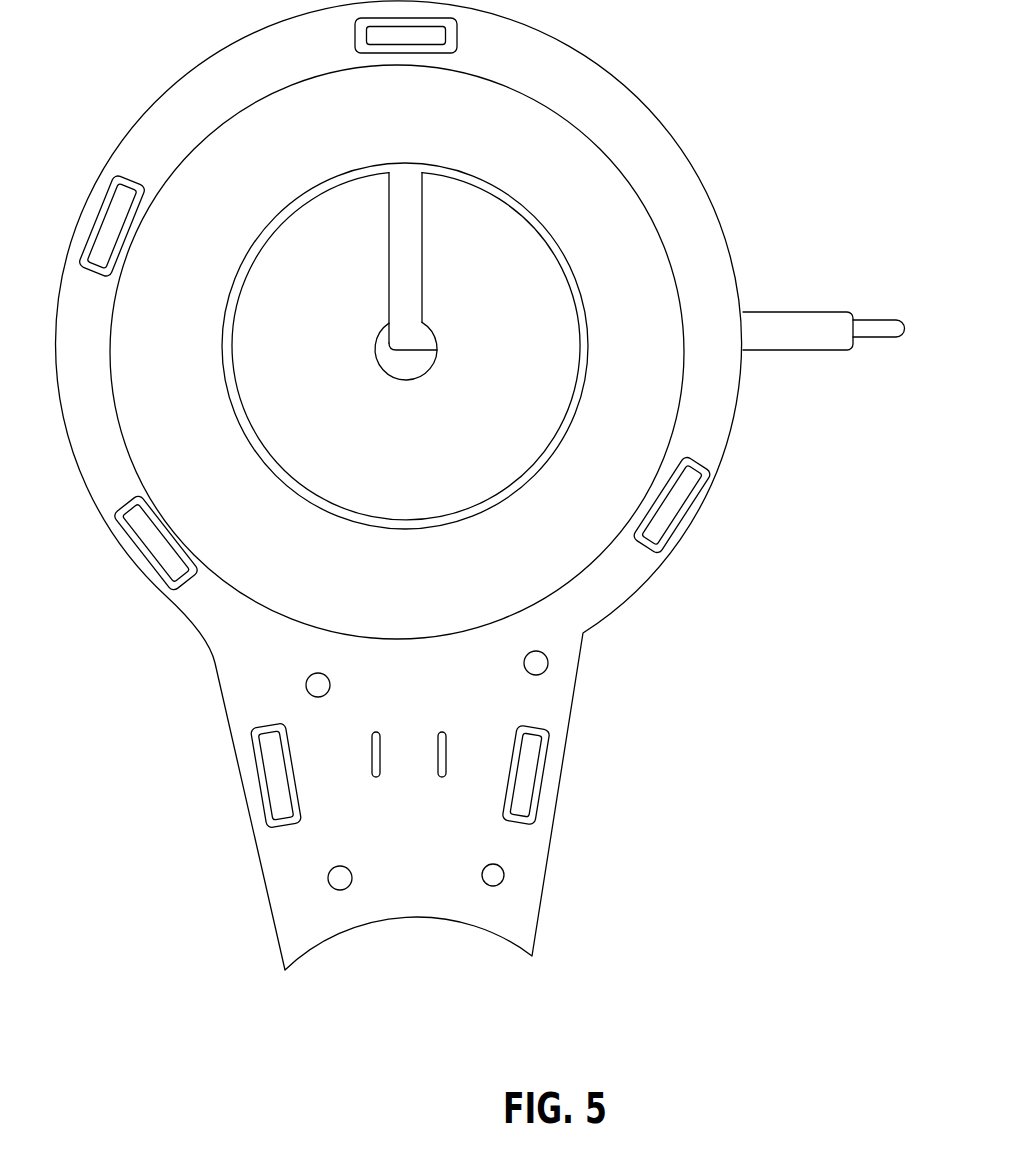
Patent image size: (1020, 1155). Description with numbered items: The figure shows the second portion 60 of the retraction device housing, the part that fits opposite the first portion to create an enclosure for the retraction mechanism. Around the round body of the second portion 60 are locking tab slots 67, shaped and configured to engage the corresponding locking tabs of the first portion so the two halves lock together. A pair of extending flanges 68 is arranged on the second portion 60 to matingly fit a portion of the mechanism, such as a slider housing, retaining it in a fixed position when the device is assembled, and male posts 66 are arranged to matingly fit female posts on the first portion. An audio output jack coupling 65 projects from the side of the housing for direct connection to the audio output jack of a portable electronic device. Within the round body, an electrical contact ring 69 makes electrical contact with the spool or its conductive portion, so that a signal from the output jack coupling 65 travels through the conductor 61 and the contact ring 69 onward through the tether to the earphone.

The second portion 60 is at (428, 133).
The conductor 61 is at (405, 242).
The audio output jack coupling 65 is at (843, 346).
The male posts 66 is at (500, 880).
The locking tab slots 67 is at (540, 768).
The extending flanges 68 is at (372, 745).
The electrical contact ring 69 is at (577, 287).